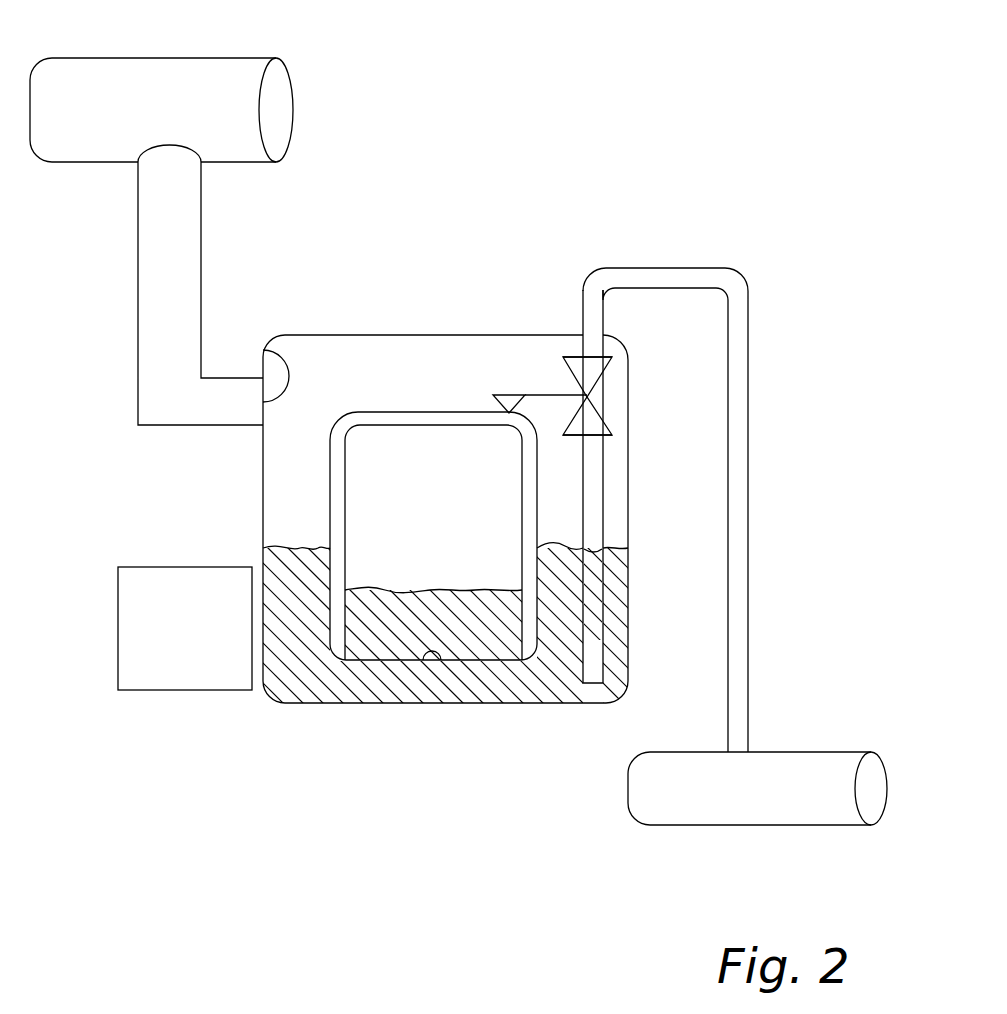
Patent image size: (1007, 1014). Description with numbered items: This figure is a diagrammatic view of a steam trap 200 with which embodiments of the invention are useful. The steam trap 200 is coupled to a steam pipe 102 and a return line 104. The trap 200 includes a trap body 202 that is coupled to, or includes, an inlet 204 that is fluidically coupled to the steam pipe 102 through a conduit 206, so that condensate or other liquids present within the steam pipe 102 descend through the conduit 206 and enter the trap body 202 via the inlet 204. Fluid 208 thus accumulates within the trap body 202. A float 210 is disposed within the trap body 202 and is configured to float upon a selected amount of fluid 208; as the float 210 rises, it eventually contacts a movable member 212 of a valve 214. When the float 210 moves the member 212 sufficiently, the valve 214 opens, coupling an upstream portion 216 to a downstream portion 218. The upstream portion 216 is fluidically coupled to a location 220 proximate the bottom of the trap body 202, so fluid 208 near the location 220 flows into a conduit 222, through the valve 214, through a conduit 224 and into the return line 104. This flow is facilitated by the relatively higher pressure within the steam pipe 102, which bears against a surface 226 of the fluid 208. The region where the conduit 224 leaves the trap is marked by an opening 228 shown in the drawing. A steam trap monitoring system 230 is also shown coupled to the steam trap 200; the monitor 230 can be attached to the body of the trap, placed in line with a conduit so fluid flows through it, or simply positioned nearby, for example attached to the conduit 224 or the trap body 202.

The steam pipe 102 is at (180, 58).
The return line 104 is at (687, 813).
The steam trap 200 is at (334, 312).
The trap body 202 is at (263, 545).
The inlet 204 is at (287, 358).
The conduit 206 is at (138, 278).
The fluid 208 is at (362, 689).
The float 210 is at (330, 472).
The movable member 212 is at (547, 393).
The valve 214 is at (613, 376).
The upstream portion 216 is at (592, 436).
The downstream portion 218 is at (602, 335).
The location 220 is at (590, 680).
The conduit 222 is at (583, 524).
The conduit 224 is at (677, 267).
The surface 226 is at (300, 547).
The outlet opening 228 is at (577, 330).
The steam trap monitoring system 230 is at (128, 591).